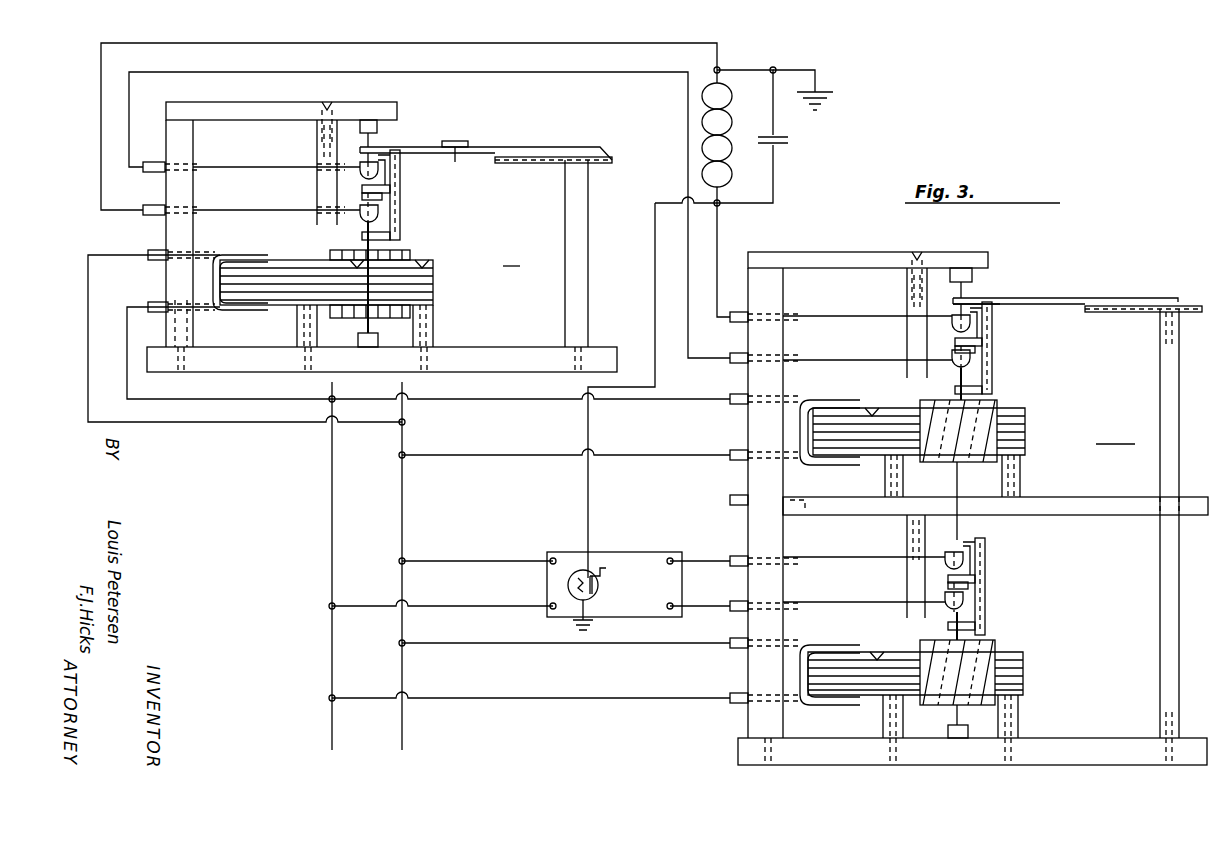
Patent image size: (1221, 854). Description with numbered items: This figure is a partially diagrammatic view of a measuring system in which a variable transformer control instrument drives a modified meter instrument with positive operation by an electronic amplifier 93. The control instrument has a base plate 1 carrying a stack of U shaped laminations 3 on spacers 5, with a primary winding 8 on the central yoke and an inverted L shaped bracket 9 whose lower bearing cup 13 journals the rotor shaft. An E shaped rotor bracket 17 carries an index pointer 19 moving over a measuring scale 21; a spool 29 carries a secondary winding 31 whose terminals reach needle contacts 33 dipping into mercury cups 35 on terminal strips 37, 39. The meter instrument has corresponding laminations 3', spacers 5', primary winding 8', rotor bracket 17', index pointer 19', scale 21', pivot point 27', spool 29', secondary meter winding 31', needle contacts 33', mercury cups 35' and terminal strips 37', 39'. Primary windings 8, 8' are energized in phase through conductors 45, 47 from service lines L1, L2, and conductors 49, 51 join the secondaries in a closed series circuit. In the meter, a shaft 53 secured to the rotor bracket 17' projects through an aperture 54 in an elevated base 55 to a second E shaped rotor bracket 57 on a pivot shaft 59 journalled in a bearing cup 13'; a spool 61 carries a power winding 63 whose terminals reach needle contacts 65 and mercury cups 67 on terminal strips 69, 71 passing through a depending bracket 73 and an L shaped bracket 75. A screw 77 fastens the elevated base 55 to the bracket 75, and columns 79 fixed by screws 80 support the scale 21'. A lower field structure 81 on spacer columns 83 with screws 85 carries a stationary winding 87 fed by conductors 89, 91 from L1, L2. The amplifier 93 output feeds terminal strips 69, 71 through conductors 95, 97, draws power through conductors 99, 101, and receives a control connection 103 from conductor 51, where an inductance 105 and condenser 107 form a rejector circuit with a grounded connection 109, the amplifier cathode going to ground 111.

The base plate 1 is at (514, 340).
The stack of U shaped laminations 3 is at (349, 282).
The spacers 5 is at (349, 326).
The primary winding 8 is at (236, 268).
The L shaped bracket 9 is at (165, 240).
The lower bearing cup 13 is at (371, 233).
The E shaped rotor bracket 17 is at (409, 195).
The index pointer 19 is at (486, 138).
The measuring scale 21 is at (571, 146).
The spool 29 is at (388, 283).
The secondary winding 31 is at (346, 275).
The needle contacts 33 is at (360, 202).
The mercury cups 35 is at (358, 197).
The terminal strip 37 is at (251, 156).
The terminal strip 39 is at (251, 198).
The conductor 45 is at (205, 421).
The conductor 47 is at (205, 396).
The conductor 49 is at (130, 92).
The conductor 51 is at (101, 126).
The shaft 53 is at (470, 118).
The aperture 54 is at (965, 515).
The elevated base 55 is at (1068, 515).
The second E shaped rotor bracket 57 is at (988, 570).
The pivot shaft 59 is at (961, 714).
The spool 61 is at (920, 652).
The winding 63 is at (990, 637).
The needle contacts 65 is at (950, 553).
The mercury cups 67 is at (978, 555).
The terminal strip 69 is at (803, 557).
The terminal strip 71 is at (808, 599).
The depending bracket 73 is at (907, 536).
The L shaped bracket 75 is at (732, 502).
The screw 77 is at (790, 510).
The columns 79 is at (1178, 458).
The screws 80 is at (1178, 345).
The field structure 81 is at (1023, 668).
The spacer columns 83 is at (1018, 716).
The screws 85 is at (1006, 650).
The stationary winding 87 is at (817, 642).
The conductor 89 is at (463, 700).
The conductor 91 is at (463, 648).
The electronic amplifier 93 is at (618, 563).
The conductor 95 is at (718, 560).
The conductor 97 is at (720, 600).
The conductor 99 is at (480, 604).
The conductor 101 is at (487, 559).
The control energizing connection 103 is at (655, 263).
The inductance 105 is at (735, 135).
The condenser 107 is at (797, 143).
The grounded connection 109 is at (803, 67).
The ground 111 is at (570, 619).
The main service line L1 is at (332, 529).
The main service line L2 is at (402, 499).
The stack of U shaped laminations 3' is at (939, 431).
The spacers 5' is at (954, 476).
The primary winding 8' is at (830, 419).
The bearing cup 13' is at (965, 501).
The E shaped rotor bracket 17' is at (1005, 348).
The index pointer 19' is at (1065, 286).
The measuring scale 21' is at (1143, 289).
The pivot point 27' is at (1009, 289).
The spool 29' is at (940, 428).
The secondary meter winding 31' is at (1024, 386).
The needle contacts 33' is at (952, 350).
The mercury cups 35' is at (950, 336).
The terminal strip 37' is at (867, 301).
The terminal strip 39' is at (867, 346).